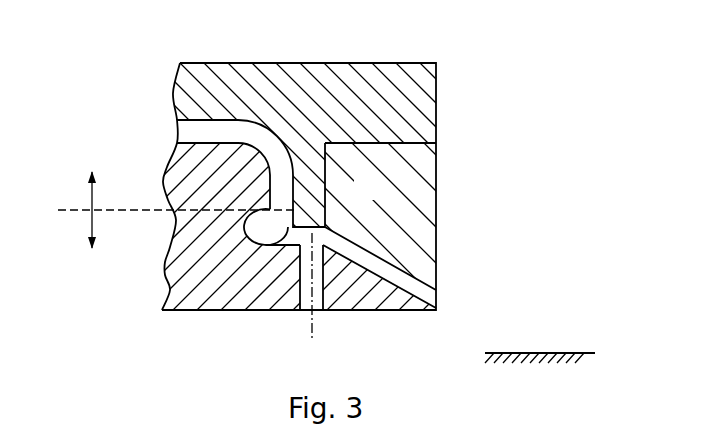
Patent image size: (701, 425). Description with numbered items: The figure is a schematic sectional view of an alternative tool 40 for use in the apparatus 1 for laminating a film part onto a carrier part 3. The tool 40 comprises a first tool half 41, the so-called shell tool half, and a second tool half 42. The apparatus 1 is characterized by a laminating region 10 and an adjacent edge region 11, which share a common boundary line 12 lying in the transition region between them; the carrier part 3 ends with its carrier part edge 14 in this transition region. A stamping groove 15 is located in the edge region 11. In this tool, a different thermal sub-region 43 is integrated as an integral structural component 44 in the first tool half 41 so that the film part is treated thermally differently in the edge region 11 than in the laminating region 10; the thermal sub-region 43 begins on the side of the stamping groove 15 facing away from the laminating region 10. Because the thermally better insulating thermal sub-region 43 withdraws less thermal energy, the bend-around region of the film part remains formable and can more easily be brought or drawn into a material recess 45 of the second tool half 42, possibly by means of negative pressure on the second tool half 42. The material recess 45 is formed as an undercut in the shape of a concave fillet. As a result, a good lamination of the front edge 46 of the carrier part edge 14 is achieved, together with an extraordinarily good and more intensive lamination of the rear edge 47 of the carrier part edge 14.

The apparatus 1 is at (573, 353).
The carrier part 3 is at (187, 126).
The laminating region 10 is at (92, 192).
The edge region 11 is at (92, 227).
The common boundary line 12 is at (108, 210).
The carrier part edge 14 is at (270, 225).
The stamping groove 15 is at (318, 313).
The alternative tool 40 is at (450, 85).
The first tool half 41 is at (398, 62).
The second tool half 42 is at (200, 318).
The thermal sub-region 43 is at (378, 198).
The integral structural component 44 is at (407, 170).
The material recess 45 is at (266, 213).
The front edge 46 is at (243, 237).
The rear edge 47 is at (242, 238).